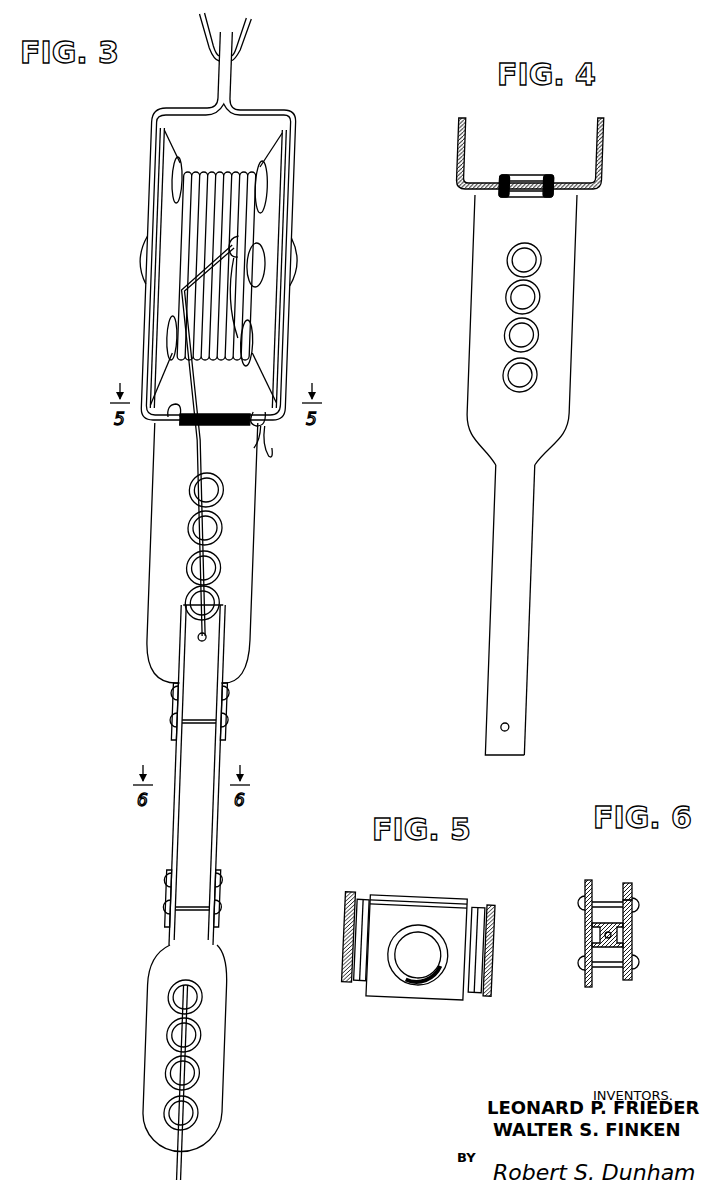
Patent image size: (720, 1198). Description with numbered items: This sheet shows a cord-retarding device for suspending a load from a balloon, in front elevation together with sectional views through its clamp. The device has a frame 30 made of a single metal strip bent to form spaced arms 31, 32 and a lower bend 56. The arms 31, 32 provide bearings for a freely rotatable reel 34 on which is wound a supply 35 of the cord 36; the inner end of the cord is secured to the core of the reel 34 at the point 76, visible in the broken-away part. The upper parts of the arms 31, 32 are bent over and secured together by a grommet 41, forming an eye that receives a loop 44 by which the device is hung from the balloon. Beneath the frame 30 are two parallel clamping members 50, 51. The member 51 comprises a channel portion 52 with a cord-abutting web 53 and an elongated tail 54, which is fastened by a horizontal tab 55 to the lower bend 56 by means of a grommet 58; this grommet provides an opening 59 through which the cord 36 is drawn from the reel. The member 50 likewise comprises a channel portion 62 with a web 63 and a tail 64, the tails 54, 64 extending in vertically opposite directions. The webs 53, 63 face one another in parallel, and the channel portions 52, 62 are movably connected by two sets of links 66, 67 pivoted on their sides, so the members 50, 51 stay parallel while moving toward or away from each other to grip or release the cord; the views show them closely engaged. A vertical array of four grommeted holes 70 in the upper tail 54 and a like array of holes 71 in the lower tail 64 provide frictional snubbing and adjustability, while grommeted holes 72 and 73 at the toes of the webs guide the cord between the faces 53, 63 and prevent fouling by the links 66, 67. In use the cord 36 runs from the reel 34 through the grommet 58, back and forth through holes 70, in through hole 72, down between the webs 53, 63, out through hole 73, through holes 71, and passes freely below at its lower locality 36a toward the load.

In FIG. 3, the frame 30 is at (251, 99).
In FIG. 3, the arm 31 is at (146, 191).
In FIG. 5, the arm 31 is at (344, 925).
In FIG. 3, the arm 32 is at (298, 165).
In FIG. 5, the arm 32 is at (493, 970).
In FIG. 3, the reel 34 is at (268, 222).
In FIG. 3, the supply of cord 35 is at (236, 170).
In FIG. 3, the cord 36 is at (191, 372).
In FIG. 6, the cord 36 is at (606, 962).
In FIG. 3, the lower locality of the cord 36a is at (185, 1168).
In FIG. 3, the grommet 41 is at (218, 80).
In FIG. 3, the loop 44 is at (205, 31).
In FIG. 3, the clamping member 50 is at (182, 1066).
In FIG. 4, the clamping member 51 is at (578, 416).
In FIG. 4, the channel portion 52 is at (536, 521).
In FIG. 6, the channel portion 52 is at (627, 886).
In FIG. 4, the web 53 is at (516, 570).
In FIG. 6, the web 53 is at (609, 920).
In FIG. 3, the tail 54 is at (162, 538).
In FIG. 3, the tab 55 is at (268, 440).
In FIG. 5, the tab 55 is at (378, 985).
In FIG. 3, the lower bend 56 is at (257, 450).
In FIG. 3, the grommet 58 is at (168, 417).
In FIG. 4, the grommet 58 is at (541, 175).
In FIG. 5, the opening 59 is at (430, 978).
In FIG. 3, the channel portion 62 is at (180, 830).
In FIG. 6, the channel portion 62 is at (590, 986).
In FIG. 3, the web 63 is at (198, 828).
In FIG. 6, the web 63 is at (618, 975).
In FIG. 3, the tail 64 is at (150, 1020).
In FIG. 3, the links 66 is at (175, 706).
In FIG. 3, the links 67 is at (172, 896).
In FIG. 6, the links 67 is at (586, 932).
In FIG. 3, the holes 70 is at (222, 494).
In FIG. 4, the holes 70 is at (536, 376).
In FIG. 3, the holes 71 is at (198, 1112).
In FIG. 3, the grommeted hole 72 is at (210, 637).
In FIG. 4, the grommeted hole 73 is at (510, 727).
In FIG. 3, the inner end of the cord 76 is at (236, 250).